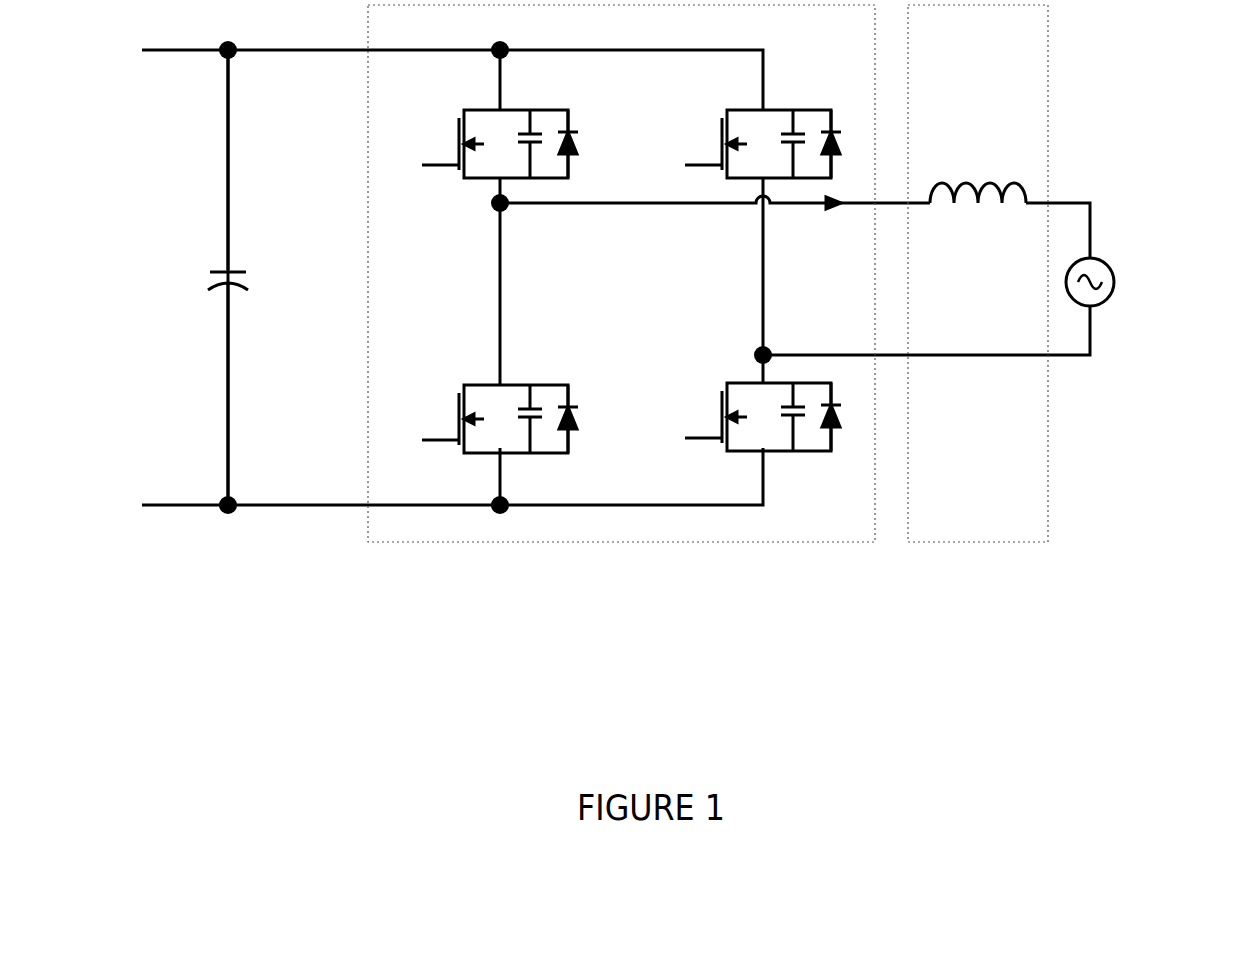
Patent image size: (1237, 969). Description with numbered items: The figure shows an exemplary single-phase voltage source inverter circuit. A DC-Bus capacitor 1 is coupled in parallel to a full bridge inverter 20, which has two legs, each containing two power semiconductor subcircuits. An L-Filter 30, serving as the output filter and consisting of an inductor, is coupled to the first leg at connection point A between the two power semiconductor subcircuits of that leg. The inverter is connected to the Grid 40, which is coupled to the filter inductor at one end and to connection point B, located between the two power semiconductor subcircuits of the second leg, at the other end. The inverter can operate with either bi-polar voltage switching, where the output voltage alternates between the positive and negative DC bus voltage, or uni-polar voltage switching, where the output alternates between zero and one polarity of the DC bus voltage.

The DC-Bus capacitor 1 is at (222, 280).
The full bridge inverter 20 is at (613, 541).
The L-Filter 30 is at (1008, 541).
The Grid 40 is at (1113, 292).